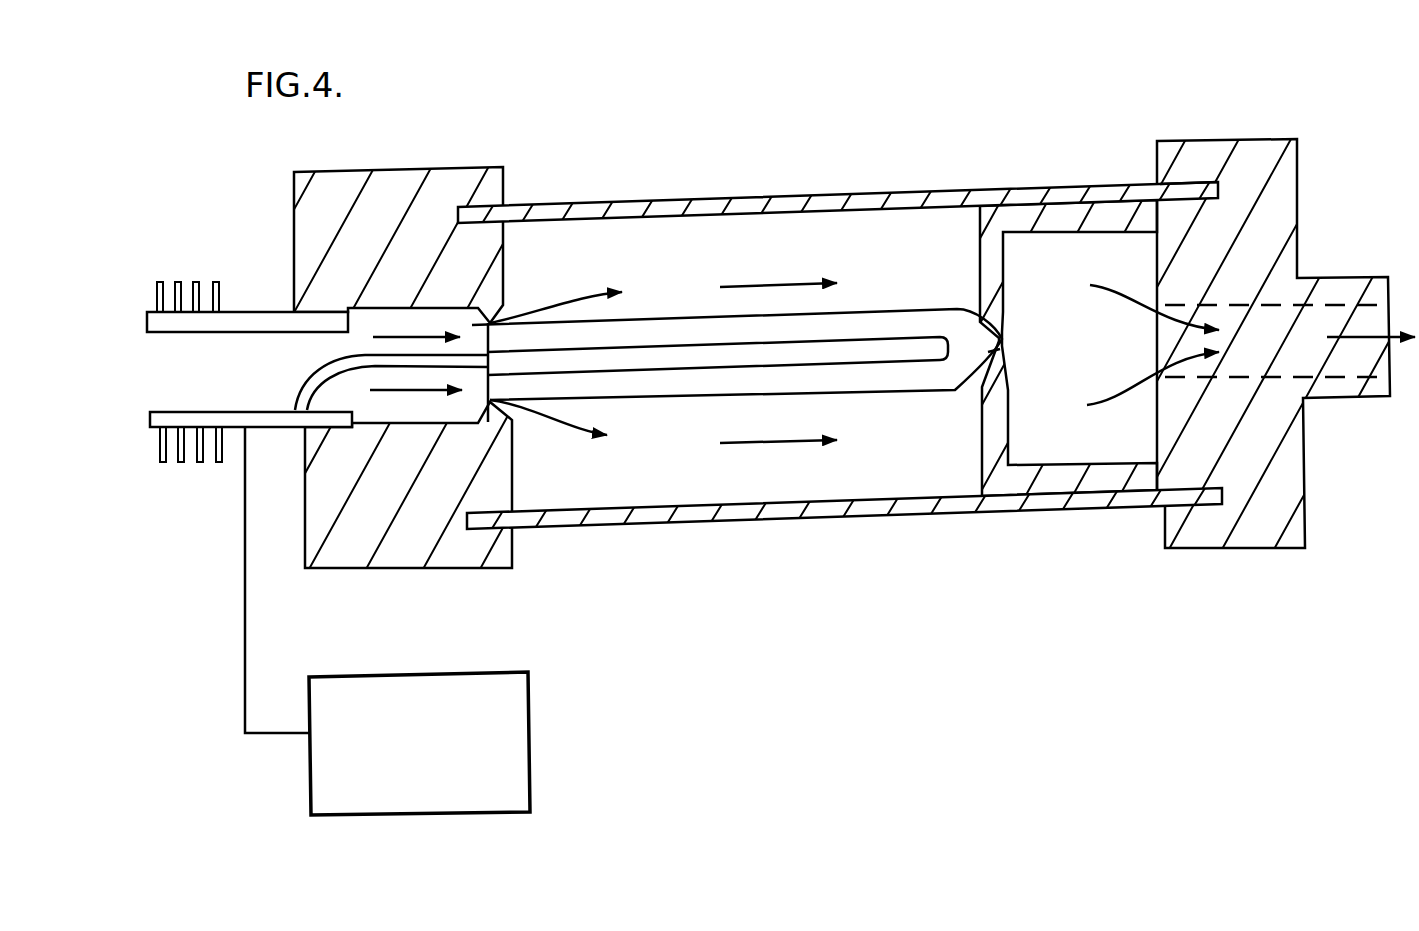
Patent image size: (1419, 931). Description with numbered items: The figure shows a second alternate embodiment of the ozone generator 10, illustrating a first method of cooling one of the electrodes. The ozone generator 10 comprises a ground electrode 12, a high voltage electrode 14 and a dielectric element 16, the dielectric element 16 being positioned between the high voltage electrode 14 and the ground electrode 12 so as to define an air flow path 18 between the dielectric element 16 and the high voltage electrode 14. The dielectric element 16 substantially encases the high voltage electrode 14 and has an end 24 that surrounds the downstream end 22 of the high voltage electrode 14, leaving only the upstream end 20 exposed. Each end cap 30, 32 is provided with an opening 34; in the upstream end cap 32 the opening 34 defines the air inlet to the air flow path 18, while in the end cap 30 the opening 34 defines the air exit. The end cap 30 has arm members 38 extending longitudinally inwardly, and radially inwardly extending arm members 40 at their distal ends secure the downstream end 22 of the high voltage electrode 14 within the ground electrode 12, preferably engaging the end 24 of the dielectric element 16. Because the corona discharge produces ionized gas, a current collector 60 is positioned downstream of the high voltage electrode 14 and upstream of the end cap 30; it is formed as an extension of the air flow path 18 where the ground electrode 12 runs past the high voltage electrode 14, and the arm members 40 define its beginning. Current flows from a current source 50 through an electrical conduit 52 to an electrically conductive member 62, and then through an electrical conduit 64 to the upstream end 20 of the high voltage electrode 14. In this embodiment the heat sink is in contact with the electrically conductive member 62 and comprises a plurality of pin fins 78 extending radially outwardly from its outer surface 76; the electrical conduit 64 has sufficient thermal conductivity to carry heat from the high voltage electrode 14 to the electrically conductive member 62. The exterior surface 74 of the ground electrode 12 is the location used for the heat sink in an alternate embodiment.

The ozone generator 10 is at (791, 137).
The ground electrode 12 is at (710, 531).
The high voltage electrode 14 is at (887, 340).
The dielectric element 16 is at (665, 318).
The air flow path 18 is at (760, 505).
The upstream end of high voltage electrode 20 is at (483, 377).
The downstream end of high voltage electrode 22 is at (958, 385).
The end of dielectric element 24 is at (1003, 337).
The end cap 30 is at (1252, 187).
The upstream end cap 32 is at (452, 570).
The opening 34 is at (1343, 320).
The arm members 38 is at (1045, 217).
The radially inwardly extending arm members 40 is at (995, 262).
The current source 50 is at (533, 715).
The electrical conduit 52 is at (249, 615).
The current collector 60 is at (1070, 183).
The electrically conductive member 62 is at (232, 429).
The electrical conduit 64 is at (346, 358).
The exterior surface of ground electrode 74 is at (733, 193).
The outer surface of electrically conductive member 76 is at (252, 309).
The pin fins 78 is at (160, 283).